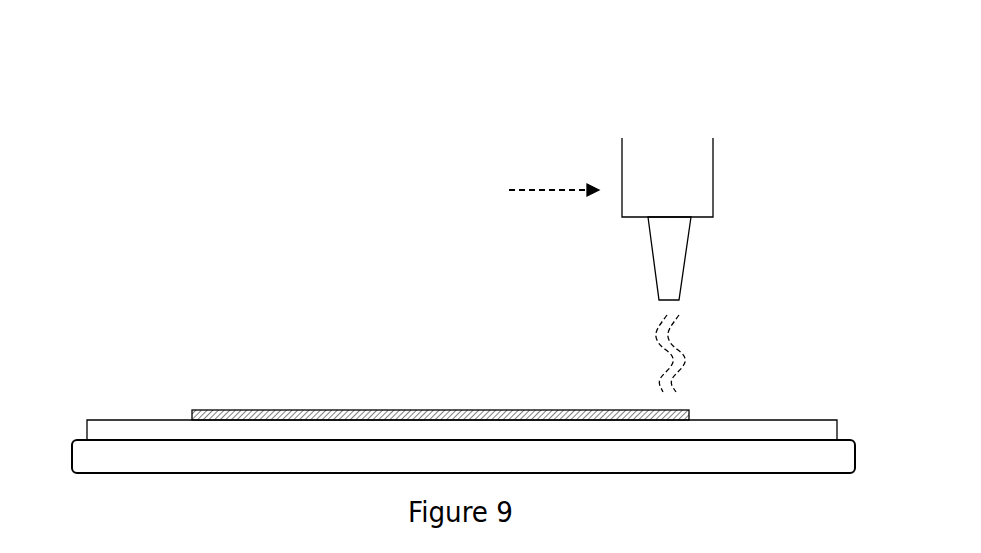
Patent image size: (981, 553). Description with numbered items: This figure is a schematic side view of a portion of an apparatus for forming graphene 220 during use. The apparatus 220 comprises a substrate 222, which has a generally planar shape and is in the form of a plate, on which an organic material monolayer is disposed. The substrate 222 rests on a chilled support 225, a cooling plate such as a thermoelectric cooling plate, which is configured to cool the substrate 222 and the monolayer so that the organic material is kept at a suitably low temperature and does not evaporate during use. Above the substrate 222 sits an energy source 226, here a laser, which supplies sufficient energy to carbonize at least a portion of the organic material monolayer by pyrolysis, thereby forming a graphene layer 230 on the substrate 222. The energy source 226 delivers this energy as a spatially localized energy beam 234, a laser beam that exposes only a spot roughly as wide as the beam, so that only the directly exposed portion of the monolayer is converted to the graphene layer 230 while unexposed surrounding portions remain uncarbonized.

The apparatus for forming graphene 220 is at (740, 67).
The substrate 222 is at (143, 428).
The chilled support 225 is at (80, 443).
The energy source 226 is at (713, 182).
The graphene layer 230 is at (227, 410).
The energy beam 234 is at (680, 355).